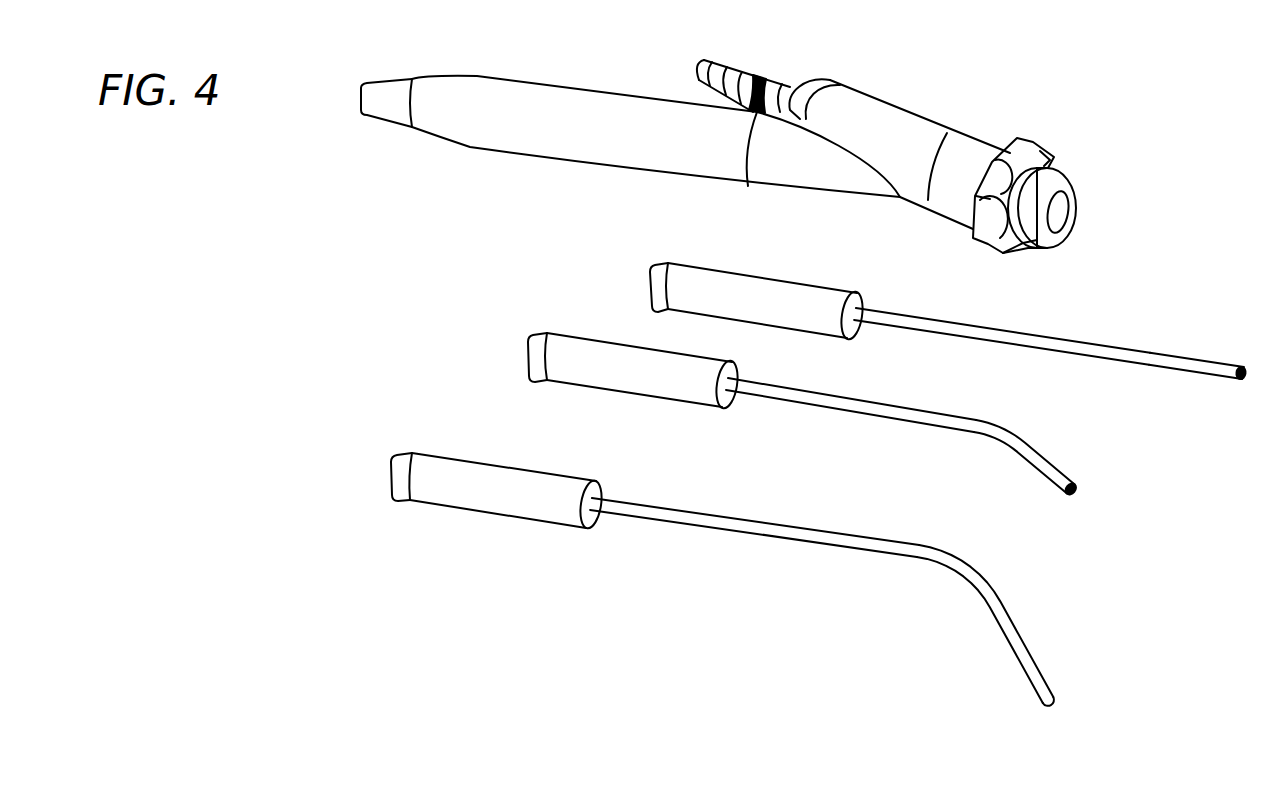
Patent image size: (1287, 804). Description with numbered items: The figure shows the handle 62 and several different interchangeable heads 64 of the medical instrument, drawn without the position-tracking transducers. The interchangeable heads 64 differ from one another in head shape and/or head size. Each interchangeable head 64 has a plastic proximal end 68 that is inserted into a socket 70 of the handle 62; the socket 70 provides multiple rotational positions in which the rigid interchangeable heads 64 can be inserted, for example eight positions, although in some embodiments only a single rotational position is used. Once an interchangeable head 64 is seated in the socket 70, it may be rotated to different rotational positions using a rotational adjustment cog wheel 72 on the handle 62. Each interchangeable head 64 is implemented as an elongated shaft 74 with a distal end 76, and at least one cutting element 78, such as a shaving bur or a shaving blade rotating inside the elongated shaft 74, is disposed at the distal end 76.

The handle 62 is at (578, 88).
The interchangeable heads 64 is at (934, 487).
The plastic proximal end 68 is at (650, 272).
The socket 70 is at (1053, 222).
The rotational adjustment cog wheel 72 is at (1038, 140).
The elongated shaft 74 is at (1003, 329).
The distal end 76 is at (1196, 361).
The cutting element 78 is at (1243, 382).